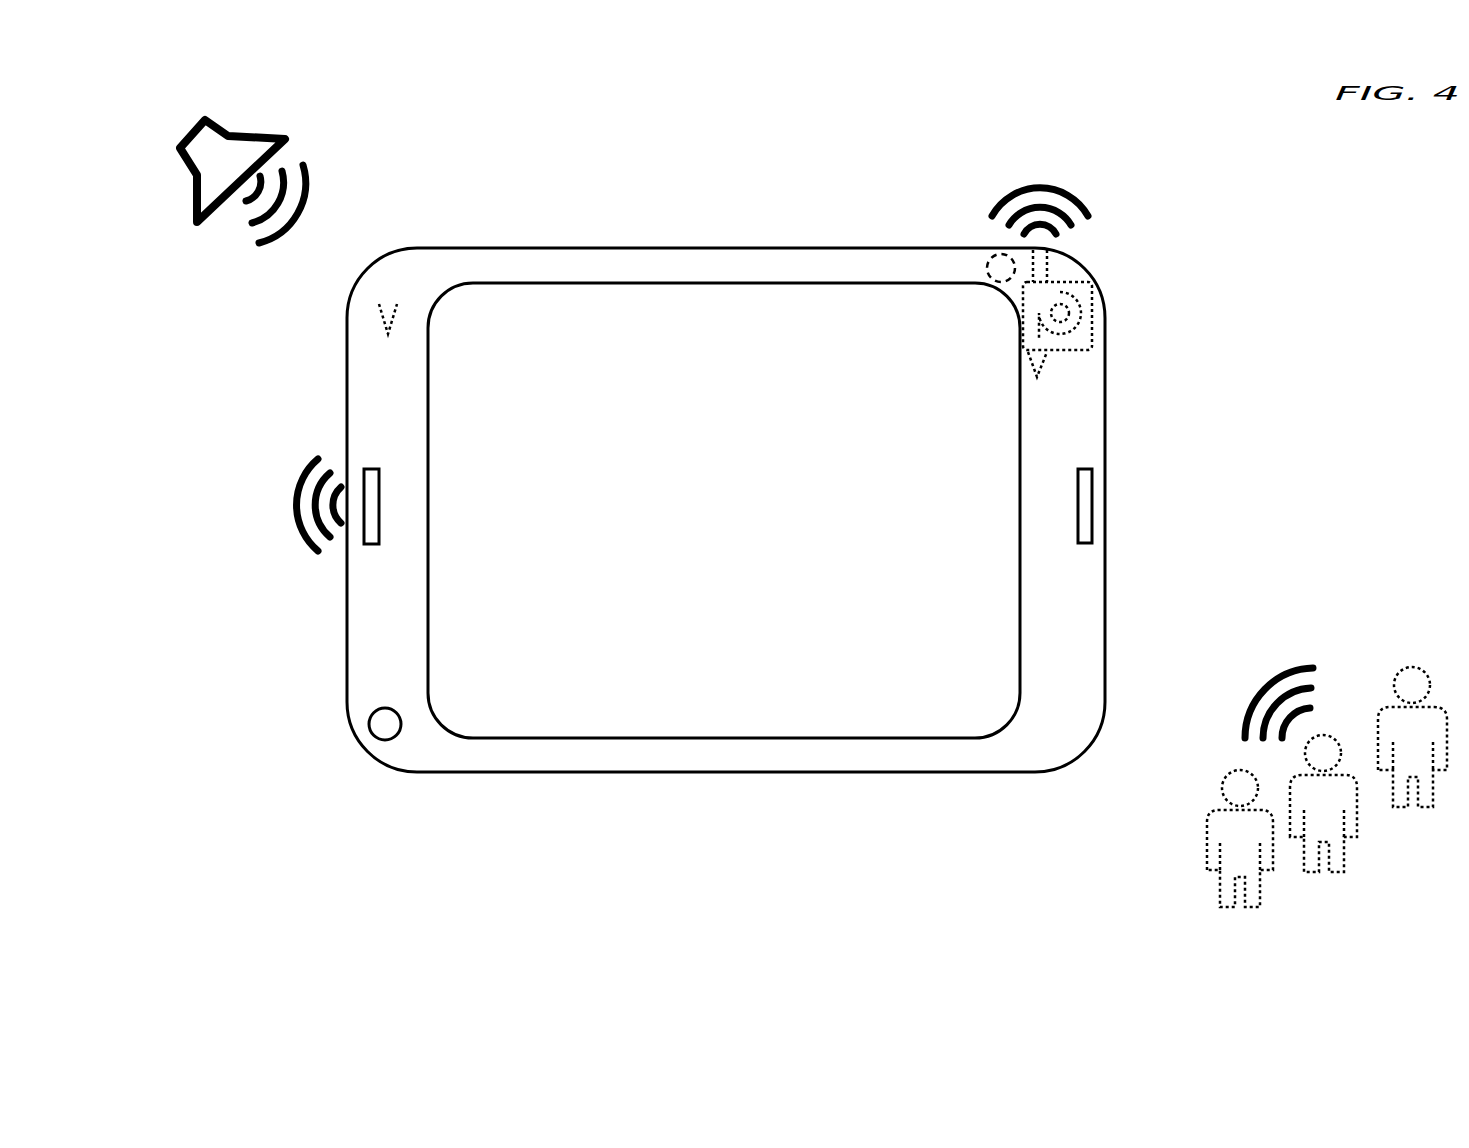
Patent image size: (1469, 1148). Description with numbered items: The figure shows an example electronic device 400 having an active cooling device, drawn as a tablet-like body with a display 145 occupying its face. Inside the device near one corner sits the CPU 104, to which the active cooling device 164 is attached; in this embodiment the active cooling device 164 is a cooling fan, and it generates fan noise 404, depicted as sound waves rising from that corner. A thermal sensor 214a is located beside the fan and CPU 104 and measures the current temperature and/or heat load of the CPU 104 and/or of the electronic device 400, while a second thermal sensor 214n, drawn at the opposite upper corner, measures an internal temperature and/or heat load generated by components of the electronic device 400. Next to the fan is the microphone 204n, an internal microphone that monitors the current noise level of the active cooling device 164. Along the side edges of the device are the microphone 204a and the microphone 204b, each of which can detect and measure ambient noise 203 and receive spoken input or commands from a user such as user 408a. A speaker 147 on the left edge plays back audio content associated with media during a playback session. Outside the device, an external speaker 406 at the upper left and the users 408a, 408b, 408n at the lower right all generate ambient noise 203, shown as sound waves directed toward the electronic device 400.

The electronic device 400 is at (726, 510).
The display 145 is at (724, 510).
The speaker 406 is at (349, 154).
The ambient noise 203 is at (779, 484).
The thermal sensor 214n is at (257, 298).
The speaker 147 is at (262, 470).
The microphone 204b is at (249, 699).
The microphone 204a is at (1200, 481).
The microphone 204n is at (876, 203).
The fan noise 404 is at (1170, 181).
The active cooling device 164 is at (1250, 256).
The CPU 104 is at (1160, 286).
The thermal sensor 214a is at (1208, 315).
The user 408a is at (1240, 854).
The user 408b is at (1325, 819).
The user 408n is at (1413, 753).